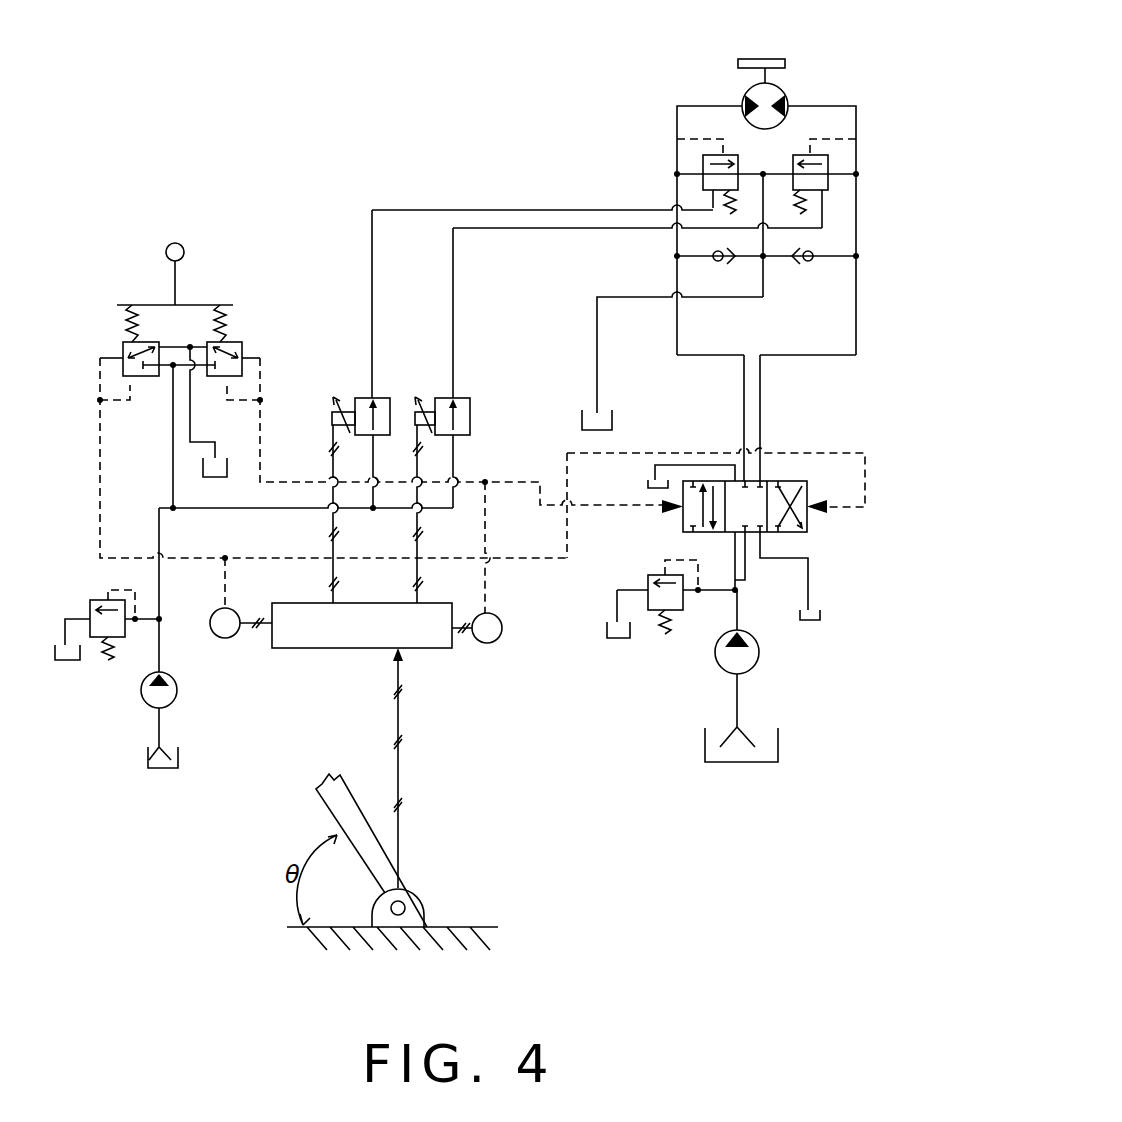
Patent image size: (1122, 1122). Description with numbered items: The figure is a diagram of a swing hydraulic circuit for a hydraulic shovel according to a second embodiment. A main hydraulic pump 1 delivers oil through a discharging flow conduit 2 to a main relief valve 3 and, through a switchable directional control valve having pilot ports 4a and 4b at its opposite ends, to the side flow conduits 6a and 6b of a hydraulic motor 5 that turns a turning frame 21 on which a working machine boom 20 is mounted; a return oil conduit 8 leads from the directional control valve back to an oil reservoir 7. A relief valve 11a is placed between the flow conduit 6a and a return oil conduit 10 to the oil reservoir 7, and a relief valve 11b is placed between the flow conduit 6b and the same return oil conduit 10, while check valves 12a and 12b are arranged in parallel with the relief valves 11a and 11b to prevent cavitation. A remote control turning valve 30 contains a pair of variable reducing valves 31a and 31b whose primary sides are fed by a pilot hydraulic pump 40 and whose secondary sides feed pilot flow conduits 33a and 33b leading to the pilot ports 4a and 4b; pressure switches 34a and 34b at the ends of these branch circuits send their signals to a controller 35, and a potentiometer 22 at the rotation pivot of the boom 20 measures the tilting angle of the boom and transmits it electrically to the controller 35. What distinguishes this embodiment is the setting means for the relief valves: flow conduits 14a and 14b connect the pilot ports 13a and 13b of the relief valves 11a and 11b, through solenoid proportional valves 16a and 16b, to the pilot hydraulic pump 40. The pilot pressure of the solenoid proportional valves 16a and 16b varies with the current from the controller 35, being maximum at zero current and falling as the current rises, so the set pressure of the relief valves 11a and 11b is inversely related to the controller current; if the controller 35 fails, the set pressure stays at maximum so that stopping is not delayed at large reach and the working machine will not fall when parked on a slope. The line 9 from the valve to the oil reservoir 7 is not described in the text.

The main hydraulic pump 1 is at (755, 668).
The discharging flow conduit 2 is at (745, 620).
The main relief valve 3 is at (676, 624).
The pilot port 4a is at (660, 512).
The pilot port 4b is at (827, 514).
The hydraulic motor 5 is at (790, 86).
The side flow conduit 6a is at (677, 112).
The side flow conduit 6b is at (856, 108).
The oil reservoir 7 is at (612, 418).
The return oil conduit 8 is at (685, 465).
The return line 9 is at (808, 585).
The return oil conduit 10 is at (640, 297).
The relief valve 11a is at (703, 166).
The relief valve 11b is at (828, 160).
The check valve 12a is at (712, 258).
The check valve 12b is at (810, 262).
The pilot port 13a is at (713, 198).
The pilot port 13b is at (827, 193).
The flow conduit 14a is at (515, 210).
The flow conduit 14b is at (500, 235).
The solenoid proportional valve 16a is at (383, 397).
The solenoid proportional valve 16b is at (470, 398).
The working machine boom 20 is at (363, 810).
The turning frame 21 is at (786, 62).
The potentiometer 22 is at (410, 903).
The remote control turning valve 30 is at (205, 231).
The variable reducing valve 31a is at (242, 345).
The variable reducing valve 31b is at (125, 340).
The pilot flow conduit 33a is at (262, 418).
The pilot flow conduit 33b is at (102, 478).
The pressure switch 34a is at (497, 642).
The pressure switch 34b is at (228, 638).
The controller 35 is at (435, 650).
The pilot hydraulic pump 40 is at (142, 693).